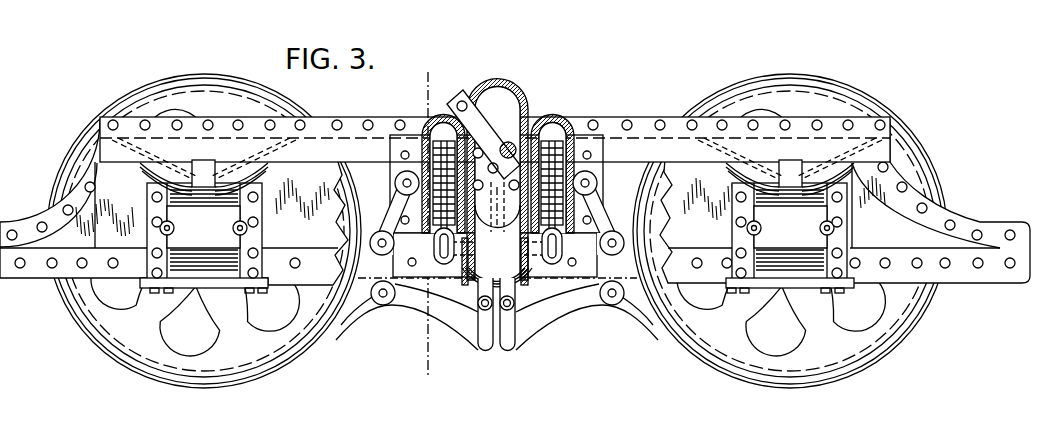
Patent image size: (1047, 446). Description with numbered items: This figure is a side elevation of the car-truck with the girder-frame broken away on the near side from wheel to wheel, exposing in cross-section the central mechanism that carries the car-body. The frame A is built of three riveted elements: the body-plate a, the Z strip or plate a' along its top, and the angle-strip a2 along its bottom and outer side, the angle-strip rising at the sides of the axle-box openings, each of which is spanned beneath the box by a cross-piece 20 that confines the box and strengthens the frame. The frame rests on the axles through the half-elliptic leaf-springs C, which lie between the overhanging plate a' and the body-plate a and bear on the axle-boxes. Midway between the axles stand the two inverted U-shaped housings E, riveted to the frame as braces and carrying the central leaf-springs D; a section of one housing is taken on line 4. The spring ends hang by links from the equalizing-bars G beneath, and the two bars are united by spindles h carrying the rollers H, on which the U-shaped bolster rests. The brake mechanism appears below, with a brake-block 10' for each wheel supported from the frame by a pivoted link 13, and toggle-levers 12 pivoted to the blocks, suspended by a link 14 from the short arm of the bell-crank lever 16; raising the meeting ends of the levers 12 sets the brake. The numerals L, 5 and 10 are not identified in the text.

The cross-piece 20 is at (192, 287).
The frame A is at (640, 117).
The body-plate a is at (515, 202).
The Z strip or plate a' is at (507, 183).
The angle-strip a2 is at (950, 284).
The half-elliptic leaf-springs C is at (152, 171).
The section line 4 4 is at (428, 225).
The half-elliptic leaf-springs D is at (390, 148).
The rollers H is at (462, 284).
The central spring hanger L is at (497, 169).
The housings E is at (425, 118).
The equalizing-bar G is at (433, 242).
The spindles or axles h is at (576, 262).
The link 14 is at (526, 282).
The brake quadrant or bell-crank lever 16 is at (486, 120).
The center rod 5 is at (500, 200).
The link 13 is at (393, 215).
The brake-block 10' is at (407, 315).
The right lower equalizing bar 10 is at (587, 315).
The toggle-levers 12 is at (478, 318).